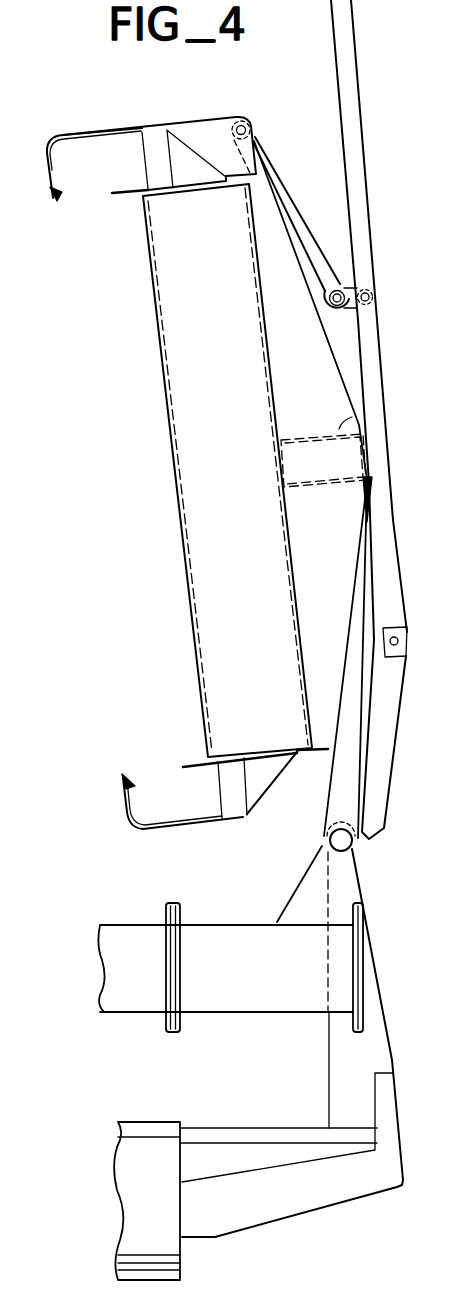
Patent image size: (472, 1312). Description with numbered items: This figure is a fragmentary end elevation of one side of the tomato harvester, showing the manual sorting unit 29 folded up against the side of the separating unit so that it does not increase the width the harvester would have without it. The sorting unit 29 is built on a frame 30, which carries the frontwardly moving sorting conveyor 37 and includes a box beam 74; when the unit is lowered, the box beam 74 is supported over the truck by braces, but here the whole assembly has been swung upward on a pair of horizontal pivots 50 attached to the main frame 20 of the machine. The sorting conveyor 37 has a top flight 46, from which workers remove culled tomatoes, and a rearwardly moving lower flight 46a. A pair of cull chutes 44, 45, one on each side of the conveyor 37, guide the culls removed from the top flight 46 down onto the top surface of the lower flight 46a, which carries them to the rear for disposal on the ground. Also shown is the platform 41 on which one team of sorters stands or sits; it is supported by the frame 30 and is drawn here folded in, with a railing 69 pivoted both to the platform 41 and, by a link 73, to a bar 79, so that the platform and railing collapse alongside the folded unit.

The main frame 20 is at (377, 1044).
The manual sorting unit 29 is at (264, 104).
The frame 30 is at (392, 419).
The sorting conveyor 37 is at (183, 474).
The platform 41 is at (386, 731).
The cull chute 44 is at (113, 172).
The cull chute 45 is at (158, 790).
The top flight 46 is at (155, 316).
The lower flight 46a is at (263, 359).
The horizontal pivot 50 is at (344, 842).
The railing 69 is at (374, 338).
The link 73 is at (354, 285).
The box beam 74 is at (359, 409).
The bar 79 is at (304, 224).